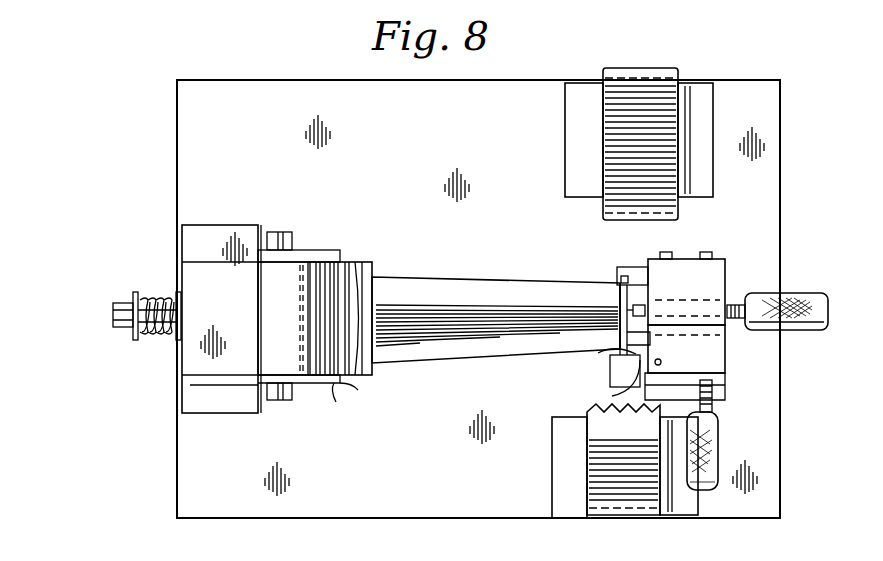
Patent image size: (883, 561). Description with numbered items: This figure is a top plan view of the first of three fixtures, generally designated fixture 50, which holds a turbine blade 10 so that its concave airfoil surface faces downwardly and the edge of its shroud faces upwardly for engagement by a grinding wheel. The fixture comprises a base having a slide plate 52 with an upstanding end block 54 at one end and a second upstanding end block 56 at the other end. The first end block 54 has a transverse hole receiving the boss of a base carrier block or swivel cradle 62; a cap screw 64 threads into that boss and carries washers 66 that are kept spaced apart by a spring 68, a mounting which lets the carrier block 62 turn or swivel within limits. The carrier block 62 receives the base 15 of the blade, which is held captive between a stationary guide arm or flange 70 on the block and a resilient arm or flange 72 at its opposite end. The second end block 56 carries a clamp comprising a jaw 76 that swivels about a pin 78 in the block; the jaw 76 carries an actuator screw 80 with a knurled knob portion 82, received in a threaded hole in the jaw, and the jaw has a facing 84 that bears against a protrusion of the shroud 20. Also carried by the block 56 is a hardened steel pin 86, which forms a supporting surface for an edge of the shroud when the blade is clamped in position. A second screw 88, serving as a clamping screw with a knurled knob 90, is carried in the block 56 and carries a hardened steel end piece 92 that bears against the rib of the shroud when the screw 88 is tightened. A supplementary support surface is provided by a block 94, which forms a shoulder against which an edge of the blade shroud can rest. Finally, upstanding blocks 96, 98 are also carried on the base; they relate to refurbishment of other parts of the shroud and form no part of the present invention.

The tube 10 is at (473, 276).
The base of the turbine blade 15 is at (358, 265).
The shroud 20 is at (618, 301).
The fixture 50 is at (790, 388).
The slide plate 52 is at (770, 215).
The end block 54 is at (218, 360).
The second upstanding end block 56 is at (726, 350).
The base carrier block or swivel cradle 62 is at (282, 219).
The cap screw 64 is at (113, 312).
The washers 66 is at (182, 304).
The spring 68 is at (142, 298).
The stationary guide arm or flange 70 is at (320, 250).
The resilient arm or flange 72 is at (308, 397).
The jaw 76 is at (610, 376).
The pin 78 is at (662, 361).
The actuator screw 80 is at (712, 410).
The knurled knob portion 82 is at (706, 447).
The facing 84 is at (600, 353).
The hardened steel pin 86 is at (614, 388).
The second screw 88 is at (736, 302).
The knurled knob 90 is at (810, 303).
The hardened steel end piece 92 is at (634, 290).
The block 94 is at (684, 268).
The upstanding block 96 is at (565, 110).
The upstanding block 98 is at (620, 130).